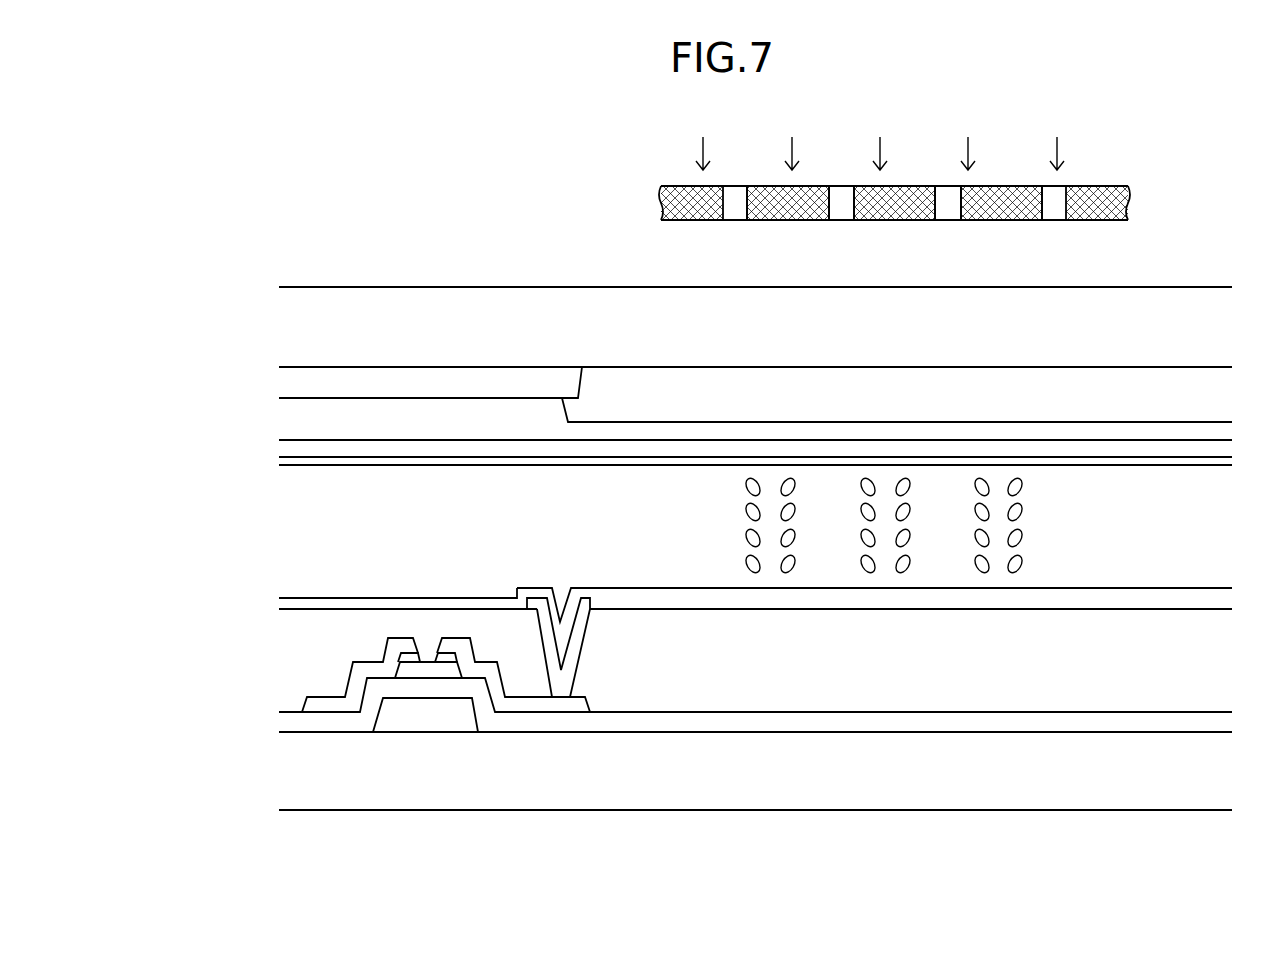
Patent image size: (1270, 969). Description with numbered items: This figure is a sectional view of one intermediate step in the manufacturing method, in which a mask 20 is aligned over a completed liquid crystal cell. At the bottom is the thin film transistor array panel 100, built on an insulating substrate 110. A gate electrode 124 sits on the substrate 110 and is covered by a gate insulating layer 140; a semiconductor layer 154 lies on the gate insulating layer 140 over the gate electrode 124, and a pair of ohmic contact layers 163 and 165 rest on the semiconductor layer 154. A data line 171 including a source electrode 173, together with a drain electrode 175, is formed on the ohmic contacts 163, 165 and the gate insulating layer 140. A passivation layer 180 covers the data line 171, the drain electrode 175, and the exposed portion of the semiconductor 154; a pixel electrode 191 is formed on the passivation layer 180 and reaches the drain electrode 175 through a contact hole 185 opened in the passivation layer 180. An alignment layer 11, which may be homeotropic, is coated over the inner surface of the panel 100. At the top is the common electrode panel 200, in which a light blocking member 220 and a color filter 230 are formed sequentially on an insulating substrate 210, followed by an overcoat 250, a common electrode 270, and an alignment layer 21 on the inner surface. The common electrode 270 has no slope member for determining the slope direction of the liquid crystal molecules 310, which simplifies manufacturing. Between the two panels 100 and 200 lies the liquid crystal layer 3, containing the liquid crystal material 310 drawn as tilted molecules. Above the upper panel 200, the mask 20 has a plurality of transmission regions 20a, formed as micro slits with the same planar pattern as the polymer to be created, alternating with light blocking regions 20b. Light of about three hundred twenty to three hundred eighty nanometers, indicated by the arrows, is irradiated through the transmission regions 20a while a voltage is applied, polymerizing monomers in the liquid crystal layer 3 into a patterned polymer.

The mask 20 is at (909, 154).
The transmission regions 20a is at (917, 178).
The light blocking regions 20b is at (1105, 197).
The common electrode panel 200 is at (743, 360).
The insulating substrate 210 is at (735, 318).
The light blocking member 220 is at (510, 383).
The color filter 230 is at (883, 393).
The overcoat 250 is at (377, 420).
The common electrode 270 is at (1045, 450).
The alignment layer 21 is at (1222, 461).
The LC layer 3 is at (661, 531).
The liquid crystal molecules 310 is at (1019, 537).
The thin film transistor array panel 100 is at (743, 692).
The insulating substrate 110 is at (892, 778).
The gate electrode 124 is at (405, 717).
The gate insulating layer 140 is at (962, 722).
The semiconductor layer 154 is at (445, 672).
The ohmic contact layer 163 is at (405, 653).
The ohmic contact layer 165 is at (445, 653).
The data line 171 is at (315, 703).
The source electrode 173 is at (350, 703).
The drain electrode 175 is at (573, 707).
The passivation layer 180 is at (1029, 662).
The contact hole 185 is at (542, 623).
The pixel electrode 191 is at (676, 603).
The alignment layer 11 is at (1222, 595).